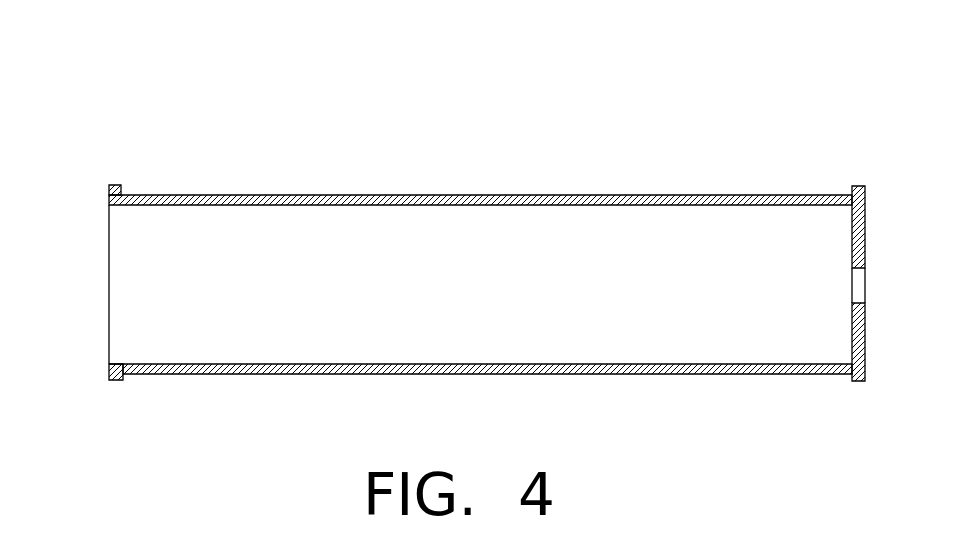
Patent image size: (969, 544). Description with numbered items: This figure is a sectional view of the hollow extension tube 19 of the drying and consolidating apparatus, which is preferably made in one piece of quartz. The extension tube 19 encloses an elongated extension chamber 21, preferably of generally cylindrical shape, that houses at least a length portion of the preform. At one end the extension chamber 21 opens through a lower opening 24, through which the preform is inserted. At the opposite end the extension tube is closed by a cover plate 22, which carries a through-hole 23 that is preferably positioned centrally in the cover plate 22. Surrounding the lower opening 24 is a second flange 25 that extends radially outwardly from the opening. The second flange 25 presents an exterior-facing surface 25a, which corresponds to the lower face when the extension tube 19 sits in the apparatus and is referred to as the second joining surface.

The extension tube 19 is at (597, 157).
The extension chamber 21 is at (168, 253).
The cover plate 22 is at (865, 197).
The through-hole 23 is at (873, 277).
The lower opening 24 is at (145, 322).
The second flange 25 is at (120, 190).
The exterior-facing surface 25a is at (109, 367).